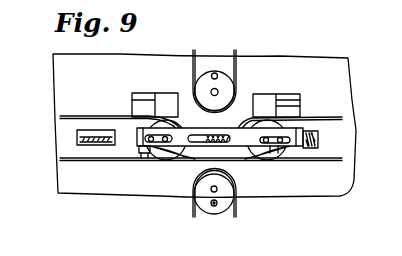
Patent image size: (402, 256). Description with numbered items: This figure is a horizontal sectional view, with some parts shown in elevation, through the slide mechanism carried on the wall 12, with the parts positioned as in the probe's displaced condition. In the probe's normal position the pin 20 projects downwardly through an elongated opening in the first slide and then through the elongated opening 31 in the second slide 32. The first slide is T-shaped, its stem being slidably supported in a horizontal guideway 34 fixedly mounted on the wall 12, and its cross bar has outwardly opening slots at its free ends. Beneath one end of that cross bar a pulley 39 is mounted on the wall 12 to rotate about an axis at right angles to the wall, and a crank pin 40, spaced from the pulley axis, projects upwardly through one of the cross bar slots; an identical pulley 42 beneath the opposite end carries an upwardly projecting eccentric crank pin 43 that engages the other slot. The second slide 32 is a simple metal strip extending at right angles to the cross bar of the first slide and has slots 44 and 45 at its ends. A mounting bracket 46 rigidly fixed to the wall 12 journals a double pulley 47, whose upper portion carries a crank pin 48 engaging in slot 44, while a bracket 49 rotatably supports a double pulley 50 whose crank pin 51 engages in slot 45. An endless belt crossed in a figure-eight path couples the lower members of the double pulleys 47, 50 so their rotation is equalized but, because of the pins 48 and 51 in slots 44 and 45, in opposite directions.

The wall 12 is at (311, 80).
The pin 20 is at (220, 150).
The elongated opening 31 is at (233, 146).
The second slide 32 is at (270, 160).
The horizontal guideway 34 is at (105, 142).
The pulley 39 is at (228, 90).
The crank pin 40 is at (211, 76).
The pulley 42 is at (192, 201).
The eccentric crank pin 43 is at (213, 206).
The slot 44 is at (140, 153).
The slot 45 is at (297, 147).
The mounting bracket 46 is at (143, 97).
The double pulley 47 is at (148, 127).
The crank pin 48 is at (152, 142).
The bracket 49 is at (289, 98).
The double pulley 50 is at (268, 129).
The crank pin 51 is at (281, 143).